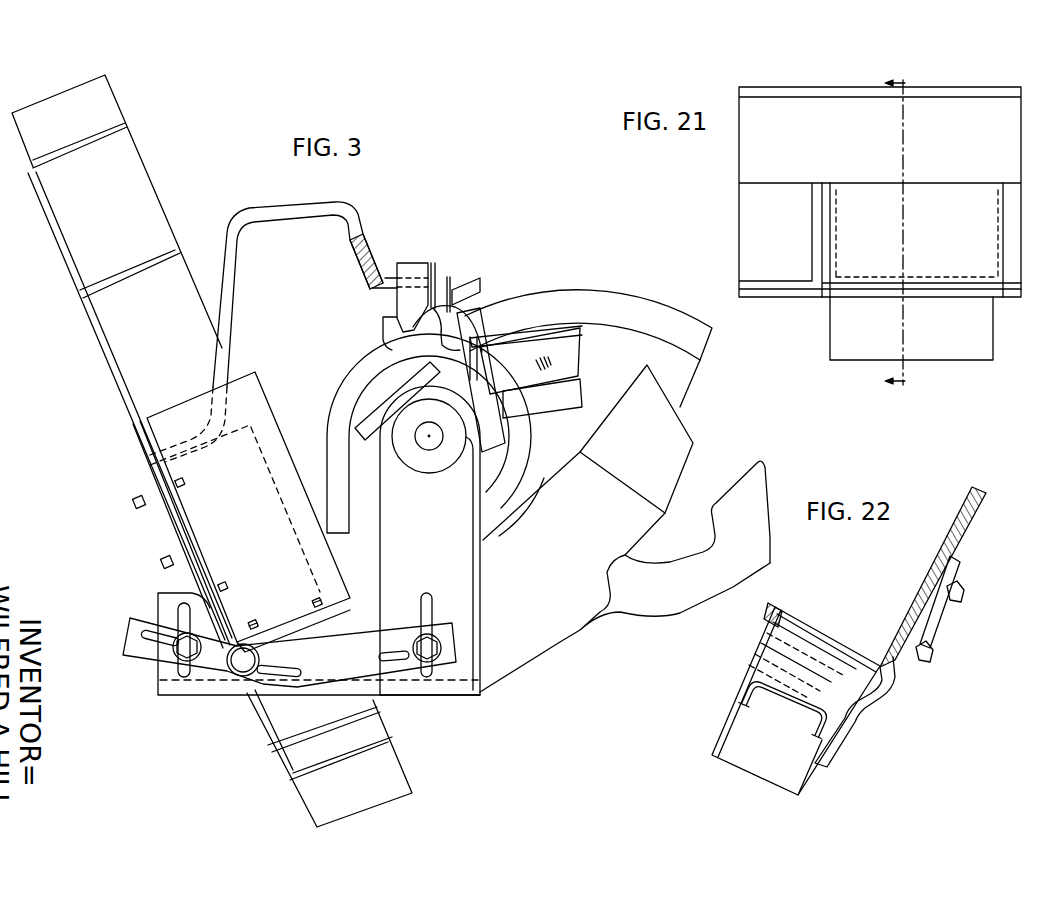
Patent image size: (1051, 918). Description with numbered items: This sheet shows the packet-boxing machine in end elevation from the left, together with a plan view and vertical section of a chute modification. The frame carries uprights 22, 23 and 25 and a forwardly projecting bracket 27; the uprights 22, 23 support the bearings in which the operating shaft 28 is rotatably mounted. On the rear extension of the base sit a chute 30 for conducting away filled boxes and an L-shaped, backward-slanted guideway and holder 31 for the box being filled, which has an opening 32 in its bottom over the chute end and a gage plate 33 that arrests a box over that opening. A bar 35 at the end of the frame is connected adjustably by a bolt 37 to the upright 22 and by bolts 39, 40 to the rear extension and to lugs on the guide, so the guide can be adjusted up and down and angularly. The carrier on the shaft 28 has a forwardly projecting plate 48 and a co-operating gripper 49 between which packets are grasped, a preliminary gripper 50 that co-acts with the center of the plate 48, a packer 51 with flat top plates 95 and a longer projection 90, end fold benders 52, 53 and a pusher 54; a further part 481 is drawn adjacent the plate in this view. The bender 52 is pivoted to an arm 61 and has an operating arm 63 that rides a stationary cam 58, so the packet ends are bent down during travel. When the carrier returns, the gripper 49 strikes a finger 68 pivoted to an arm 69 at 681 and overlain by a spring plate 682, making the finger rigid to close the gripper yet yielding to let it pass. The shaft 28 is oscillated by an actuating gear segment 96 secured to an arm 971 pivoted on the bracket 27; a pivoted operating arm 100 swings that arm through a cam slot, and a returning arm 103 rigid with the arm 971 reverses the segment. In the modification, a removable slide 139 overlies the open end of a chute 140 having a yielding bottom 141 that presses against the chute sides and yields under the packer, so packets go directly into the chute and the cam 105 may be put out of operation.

In FIG. 3, the upright 22 is at (319, 540).
In FIG. 21, the upright 22 is at (908, 234).
In FIG. 3, the upright 23 is at (384, 319).
In FIG. 3, the upright 25 is at (482, 352).
In FIG. 3, the forwardly projecting bracket 27 is at (625, 572).
In FIG. 3, the operating shaft 28 is at (430, 445).
In FIG. 3, the chute 30 is at (395, 768).
In FIG. 3, the guideway and holder 31 is at (187, 540).
In FIG. 21, the opening 32 is at (880, 192).
In FIG. 3, the gage plate 33 is at (262, 402).
In FIG. 3, the bar 35 is at (353, 655).
In FIG. 3, the bolt 37 is at (428, 648).
In FIG. 3, the bolt 39 is at (185, 645).
In FIG. 3, the bolt 40 is at (242, 667).
In FIG. 3, the forwardly projecting plate 48 is at (524, 422).
In FIG. 3, the gripper 49 is at (460, 290).
In FIG. 3, the preliminary gripper 50 is at (487, 332).
In FIG. 3, the packer 51 is at (400, 292).
In FIG. 3, the end fold bender 52 is at (537, 368).
In FIG. 3, the end fold bender 53 is at (277, 623).
In FIG. 3, the pusher 54 is at (272, 462).
In FIG. 3, the stationary cam 58 is at (363, 367).
In FIG. 3, the arm 61 is at (485, 392).
In FIG. 3, the operating arm 63 is at (517, 370).
In FIG. 3, the finger 68 is at (434, 277).
In FIG. 3, the arm 69 is at (319, 207).
In FIG. 3, the projection 90 is at (375, 420).
In FIG. 3, the flat top plate 95 is at (424, 261).
In FIG. 3, the actuating gear segment 96 is at (542, 303).
In FIG. 3, the arm 971 is at (673, 360).
In FIG. 3, the operating arm 100 is at (673, 447).
In FIG. 3, the returning arm 103 is at (757, 480).
In FIG. 3, the cam 105 is at (497, 450).
In FIG. 21, the removable slide 139 is at (921, 240).
In FIG. 22, the removable slide 139 is at (821, 642).
In FIG. 21, the chute 140 is at (978, 329).
In FIG. 22, the chute 140 is at (728, 715).
In FIG. 22, the yielding bottom 141 is at (788, 695).
In FIG. 3, the strip 481 is at (560, 392).
In FIG. 3, the pivot 681 is at (366, 254).
In FIG. 3, the spring plate 682 is at (373, 256).